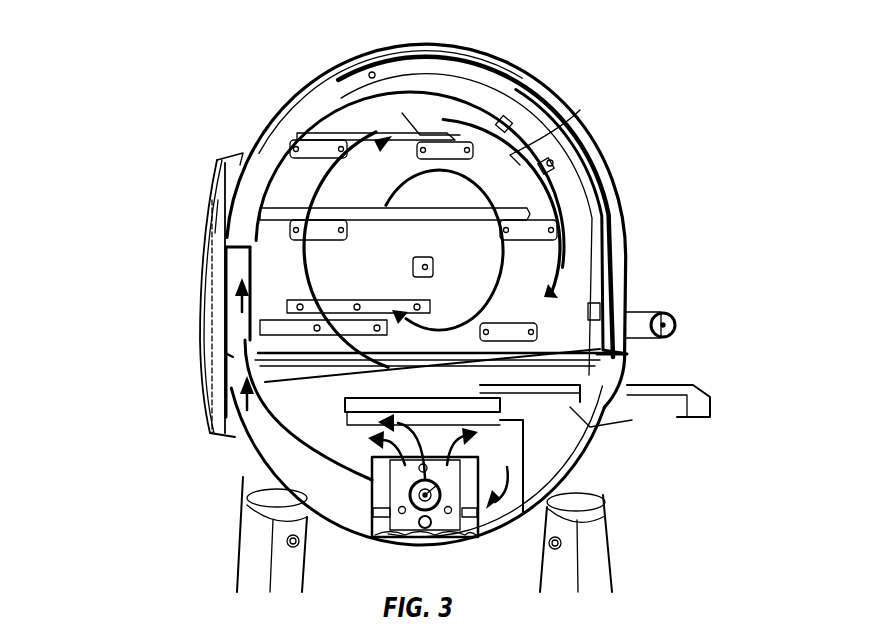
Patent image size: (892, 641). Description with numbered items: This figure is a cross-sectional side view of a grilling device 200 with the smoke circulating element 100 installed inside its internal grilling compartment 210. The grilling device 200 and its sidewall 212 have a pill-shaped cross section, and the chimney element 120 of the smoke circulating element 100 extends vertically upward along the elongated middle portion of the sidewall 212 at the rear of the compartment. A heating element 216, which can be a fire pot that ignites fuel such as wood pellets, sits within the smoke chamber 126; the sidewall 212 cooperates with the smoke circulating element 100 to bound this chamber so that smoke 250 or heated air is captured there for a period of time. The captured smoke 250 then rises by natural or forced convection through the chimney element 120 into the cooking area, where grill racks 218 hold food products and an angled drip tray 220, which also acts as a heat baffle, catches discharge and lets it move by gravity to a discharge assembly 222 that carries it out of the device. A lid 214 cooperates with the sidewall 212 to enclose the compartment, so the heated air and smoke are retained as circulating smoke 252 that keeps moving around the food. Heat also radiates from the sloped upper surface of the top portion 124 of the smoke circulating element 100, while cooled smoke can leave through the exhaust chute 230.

The smoke circulating element 100 is at (500, 452).
The chimney element 120 is at (240, 362).
The top portion 124 is at (312, 426).
The smoke chamber 126 is at (310, 417).
The grilling device 200 is at (200, 147).
The internal grilling compartment 210 is at (568, 186).
The sidewall 212 is at (322, 68).
The lid 214 is at (505, 55).
The heating element 216 is at (470, 498).
The grill racks 218 is at (447, 224).
The drip tray 220 is at (628, 363).
The discharge assembly 222 is at (610, 427).
The exhaust chute 230 is at (213, 275).
The smoke 250 is at (384, 458).
The circulating smoke 252 is at (507, 127).